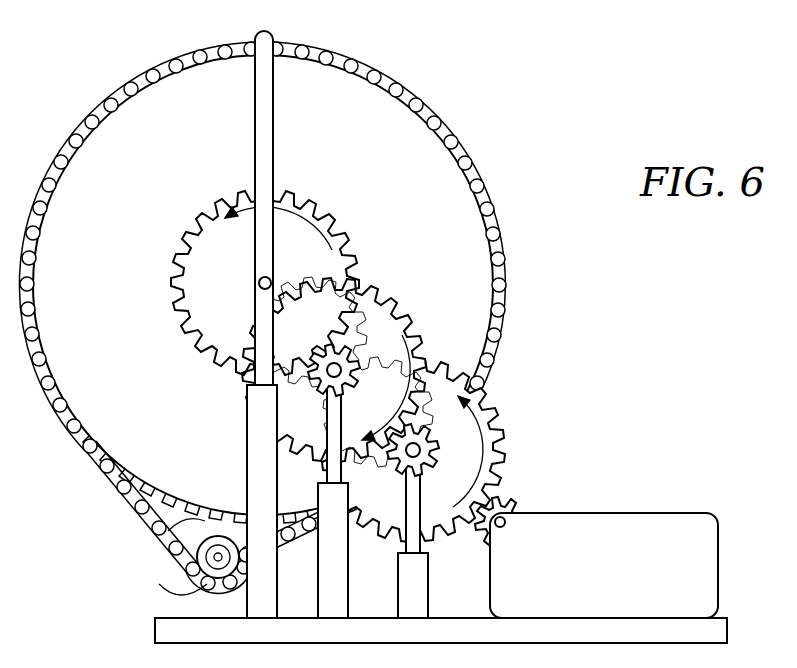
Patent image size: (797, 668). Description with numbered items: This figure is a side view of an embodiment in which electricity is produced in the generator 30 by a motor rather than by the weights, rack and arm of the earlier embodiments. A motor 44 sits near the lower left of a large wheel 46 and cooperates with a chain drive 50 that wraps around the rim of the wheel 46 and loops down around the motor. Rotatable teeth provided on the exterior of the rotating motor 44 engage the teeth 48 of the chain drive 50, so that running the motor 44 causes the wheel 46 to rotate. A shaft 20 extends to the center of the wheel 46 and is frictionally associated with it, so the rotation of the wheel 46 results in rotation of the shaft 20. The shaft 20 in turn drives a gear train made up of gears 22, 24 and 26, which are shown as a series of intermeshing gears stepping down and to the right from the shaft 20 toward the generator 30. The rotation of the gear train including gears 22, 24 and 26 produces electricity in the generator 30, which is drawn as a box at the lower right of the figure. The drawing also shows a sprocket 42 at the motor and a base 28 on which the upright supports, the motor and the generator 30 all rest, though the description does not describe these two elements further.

The shaft 20 is at (260, 279).
The gear 22 is at (279, 283).
The gear 24 is at (375, 320).
The gear 26 is at (505, 452).
The base 28 is at (157, 618).
The generator 30 is at (592, 584).
The motor sprocket 42 is at (204, 515).
The motor 44 is at (168, 527).
The wheel 46 is at (129, 345).
The teeth 48 is at (163, 492).
The chain drive 50 is at (130, 510).